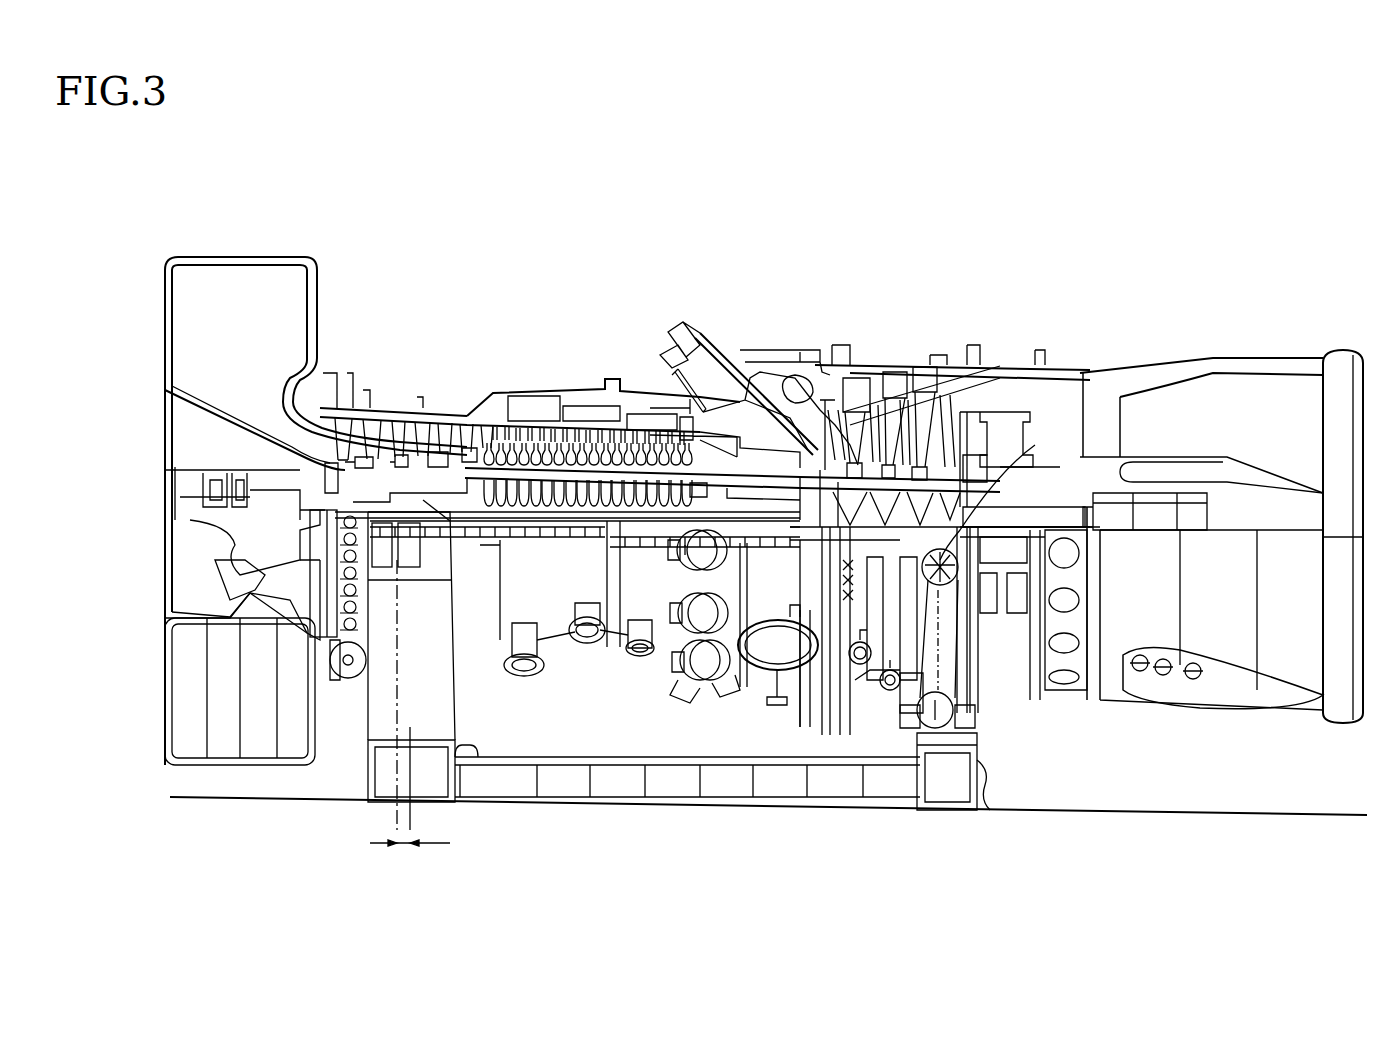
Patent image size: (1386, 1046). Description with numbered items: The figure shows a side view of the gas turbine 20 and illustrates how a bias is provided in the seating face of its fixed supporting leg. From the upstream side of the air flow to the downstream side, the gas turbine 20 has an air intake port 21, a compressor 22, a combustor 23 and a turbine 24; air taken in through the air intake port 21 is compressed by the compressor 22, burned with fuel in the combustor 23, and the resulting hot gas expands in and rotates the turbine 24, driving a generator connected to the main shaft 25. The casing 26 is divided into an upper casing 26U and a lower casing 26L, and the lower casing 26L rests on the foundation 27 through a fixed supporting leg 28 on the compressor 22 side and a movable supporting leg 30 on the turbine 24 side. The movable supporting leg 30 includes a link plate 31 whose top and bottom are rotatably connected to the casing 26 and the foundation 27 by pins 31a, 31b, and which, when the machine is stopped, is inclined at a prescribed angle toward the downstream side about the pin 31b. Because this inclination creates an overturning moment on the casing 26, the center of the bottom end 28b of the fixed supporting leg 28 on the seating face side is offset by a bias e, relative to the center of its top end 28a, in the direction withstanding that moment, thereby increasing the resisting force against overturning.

The gas turbine 20 is at (988, 230).
The air intake port 21 is at (185, 350).
The compressor 22 is at (470, 420).
The combustor 23 is at (735, 345).
The turbine 24 is at (905, 380).
The main shaft 25 is at (1053, 517).
The casing 26 is at (545, 640).
The upper casing 26U is at (532, 405).
The lower casing 26L is at (575, 640).
The foundation 27 is at (1088, 812).
The fixed supporting leg 28 is at (425, 682).
The top end 28a is at (427, 575).
The bottom end 28b is at (453, 760).
The movable supporting leg 30 is at (925, 675).
The link plate 31 is at (960, 650).
The pin 31a is at (950, 600).
The pin 31b is at (955, 715).
The bias e is at (410, 832).